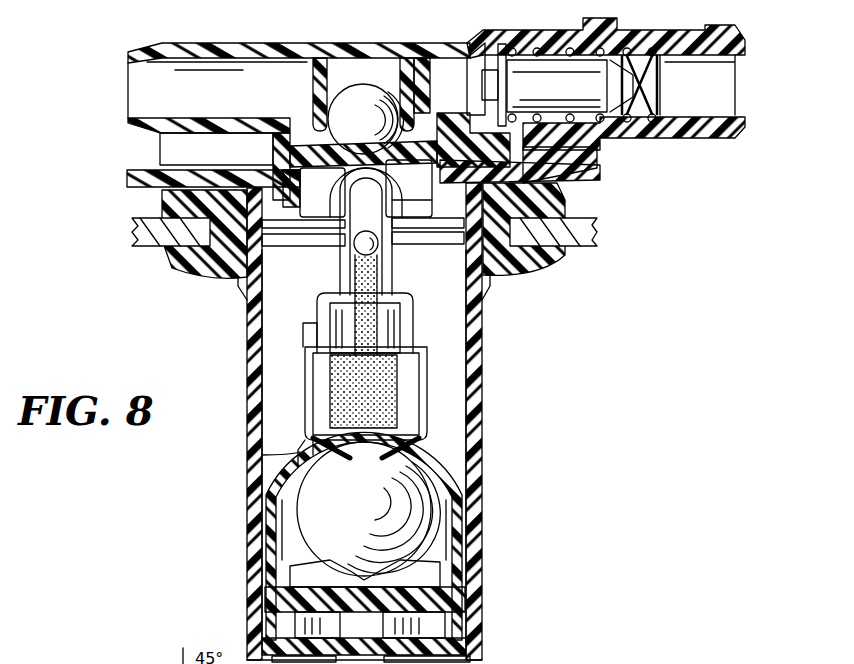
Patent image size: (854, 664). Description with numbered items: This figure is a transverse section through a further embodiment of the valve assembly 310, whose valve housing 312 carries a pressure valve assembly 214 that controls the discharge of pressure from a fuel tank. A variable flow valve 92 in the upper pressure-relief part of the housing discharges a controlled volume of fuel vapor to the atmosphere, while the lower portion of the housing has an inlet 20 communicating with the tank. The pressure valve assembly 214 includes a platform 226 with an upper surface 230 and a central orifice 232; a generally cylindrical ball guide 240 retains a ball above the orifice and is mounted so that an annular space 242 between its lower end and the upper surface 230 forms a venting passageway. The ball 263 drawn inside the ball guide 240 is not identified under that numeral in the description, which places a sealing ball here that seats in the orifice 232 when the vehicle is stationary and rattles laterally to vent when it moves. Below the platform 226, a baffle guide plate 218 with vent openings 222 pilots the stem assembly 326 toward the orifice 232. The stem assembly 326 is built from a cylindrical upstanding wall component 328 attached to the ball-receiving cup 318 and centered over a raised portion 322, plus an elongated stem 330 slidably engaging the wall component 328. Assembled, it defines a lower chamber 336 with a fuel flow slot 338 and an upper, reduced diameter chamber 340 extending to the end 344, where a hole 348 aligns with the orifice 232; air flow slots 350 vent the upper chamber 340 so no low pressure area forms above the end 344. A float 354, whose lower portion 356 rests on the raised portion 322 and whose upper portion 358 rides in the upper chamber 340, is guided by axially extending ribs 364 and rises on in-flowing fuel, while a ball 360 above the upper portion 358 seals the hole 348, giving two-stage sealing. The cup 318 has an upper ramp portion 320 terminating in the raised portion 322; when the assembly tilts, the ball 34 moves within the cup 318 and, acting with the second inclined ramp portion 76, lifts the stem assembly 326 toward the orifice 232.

The pressure valve assembly 214 is at (272, 70).
The ball guide 240 is at (328, 72).
The ball 263 is at (380, 118).
The annular space 242 is at (306, 132).
The upper surface 230 is at (412, 128).
The variable flow valve 92 is at (636, 146).
The orifice 232 is at (275, 153).
The platform 226 is at (262, 178).
The valve housing 312 is at (238, 313).
The vent openings 222 is at (300, 240).
The baffle guide plate 218 is at (325, 250).
The upper chamber 340 is at (314, 192).
The end 344 is at (409, 188).
The hole 348 is at (412, 201).
The inlet 20 is at (488, 290).
The stem assembly 326 is at (248, 339).
The air flow slots 350 is at (392, 222).
The ball 360 is at (378, 250).
The upper portion 358 is at (380, 310).
The elongated stem 330 is at (320, 340).
The lower chamber 336 is at (420, 338).
The fuel flow slot 338 is at (432, 410).
The axially extending ribs 364 is at (440, 375).
The float 354 is at (438, 388).
The lower portion 356 is at (335, 392).
The raised portion 322 is at (325, 405).
The cylindrical upstanding wall component 328 is at (300, 452).
The ball-receiving cup 318 is at (455, 495).
The upper ramp portion 320 is at (452, 458).
The ball 34 is at (372, 503).
The second inclined ramp portion 76 is at (470, 548).
The valve assembly 310 is at (100, 290).